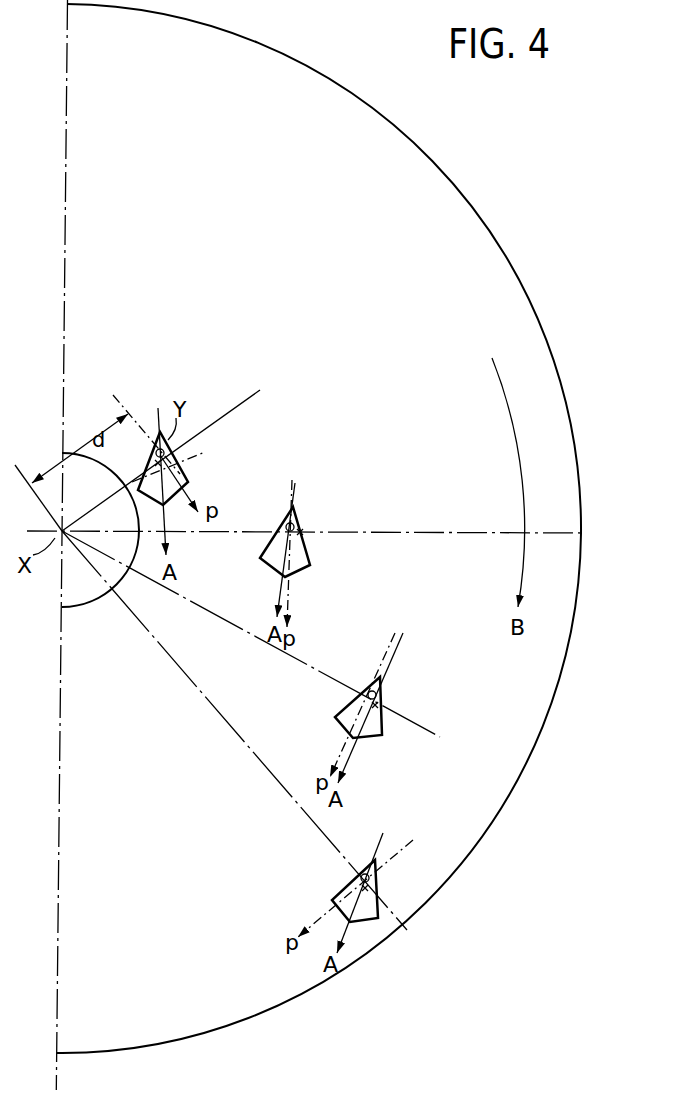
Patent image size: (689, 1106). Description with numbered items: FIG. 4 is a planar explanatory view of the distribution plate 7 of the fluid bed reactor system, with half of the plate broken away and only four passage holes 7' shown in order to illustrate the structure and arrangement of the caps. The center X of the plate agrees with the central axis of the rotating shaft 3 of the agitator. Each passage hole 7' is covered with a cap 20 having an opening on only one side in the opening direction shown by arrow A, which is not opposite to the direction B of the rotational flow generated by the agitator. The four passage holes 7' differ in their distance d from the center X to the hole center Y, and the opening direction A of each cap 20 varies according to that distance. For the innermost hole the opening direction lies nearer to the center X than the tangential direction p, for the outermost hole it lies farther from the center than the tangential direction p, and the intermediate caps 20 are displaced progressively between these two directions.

The distribution plate 7 is at (319, 528).
The rotating shaft 3 is at (83, 608).
The cap 20 is at (186, 478).
The passage hole 7' is at (287, 665).